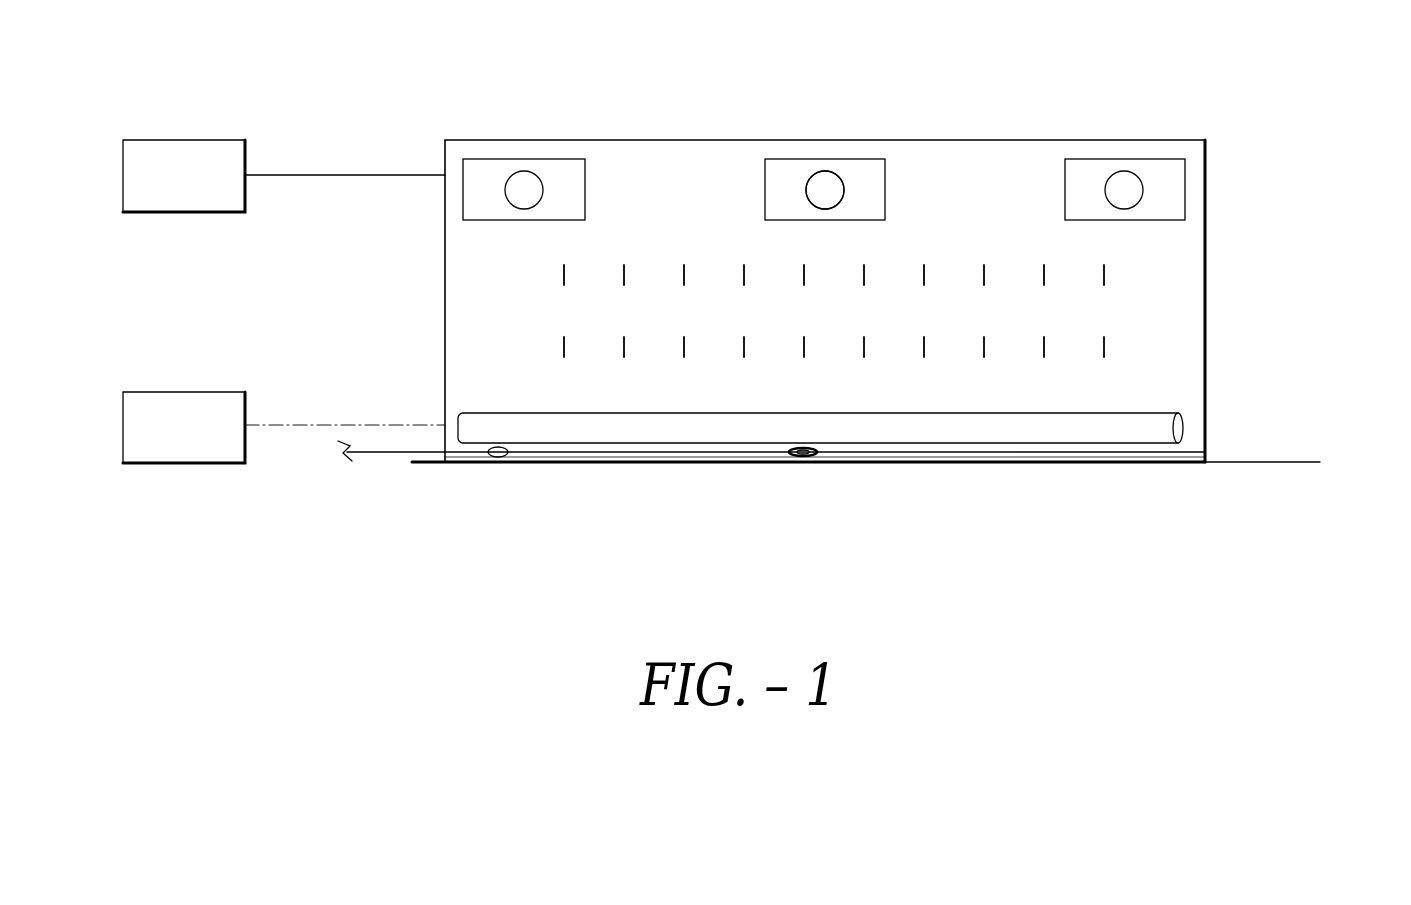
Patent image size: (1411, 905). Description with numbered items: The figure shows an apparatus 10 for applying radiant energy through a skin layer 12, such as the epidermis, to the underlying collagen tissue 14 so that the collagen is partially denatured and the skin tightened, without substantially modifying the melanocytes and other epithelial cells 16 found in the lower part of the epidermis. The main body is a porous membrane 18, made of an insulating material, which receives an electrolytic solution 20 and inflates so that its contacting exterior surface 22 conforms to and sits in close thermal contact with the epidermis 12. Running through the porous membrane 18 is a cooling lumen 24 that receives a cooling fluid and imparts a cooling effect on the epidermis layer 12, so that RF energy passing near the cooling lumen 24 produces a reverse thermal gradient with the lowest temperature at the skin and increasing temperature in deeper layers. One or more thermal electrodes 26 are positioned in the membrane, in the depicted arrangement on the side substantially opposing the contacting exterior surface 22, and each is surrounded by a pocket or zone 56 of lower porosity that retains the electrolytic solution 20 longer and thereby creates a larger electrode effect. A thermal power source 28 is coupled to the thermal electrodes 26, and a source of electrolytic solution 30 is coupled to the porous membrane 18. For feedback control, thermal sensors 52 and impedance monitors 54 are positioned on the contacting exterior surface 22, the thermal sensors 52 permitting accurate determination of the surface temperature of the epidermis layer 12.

The apparatus 10 is at (1278, 106).
The skin layer 12 is at (1221, 471).
The underlying collagen tissue 14 is at (1130, 557).
The melanocytes and other epithelial cells 16 is at (1180, 488).
The porous membrane 18 is at (445, 265).
The electrolytic solution 20 is at (562, 348).
The contacting exterior surface 22 is at (642, 463).
The cooling lumen 24 is at (1183, 428).
The thermal electrodes 26 is at (524, 180).
The thermal power source 28 is at (190, 140).
The source of electrolytic solution 30 is at (188, 463).
The thermal sensors 52 is at (496, 457).
The impedance monitors 54 is at (800, 460).
The pockets or zones 56 is at (866, 170).